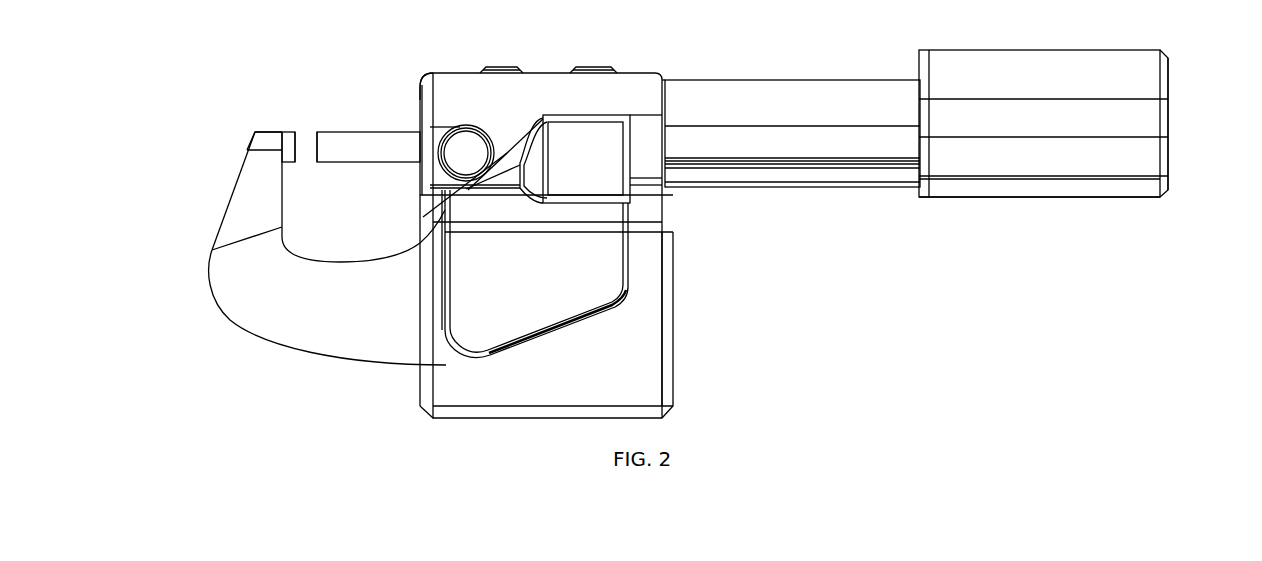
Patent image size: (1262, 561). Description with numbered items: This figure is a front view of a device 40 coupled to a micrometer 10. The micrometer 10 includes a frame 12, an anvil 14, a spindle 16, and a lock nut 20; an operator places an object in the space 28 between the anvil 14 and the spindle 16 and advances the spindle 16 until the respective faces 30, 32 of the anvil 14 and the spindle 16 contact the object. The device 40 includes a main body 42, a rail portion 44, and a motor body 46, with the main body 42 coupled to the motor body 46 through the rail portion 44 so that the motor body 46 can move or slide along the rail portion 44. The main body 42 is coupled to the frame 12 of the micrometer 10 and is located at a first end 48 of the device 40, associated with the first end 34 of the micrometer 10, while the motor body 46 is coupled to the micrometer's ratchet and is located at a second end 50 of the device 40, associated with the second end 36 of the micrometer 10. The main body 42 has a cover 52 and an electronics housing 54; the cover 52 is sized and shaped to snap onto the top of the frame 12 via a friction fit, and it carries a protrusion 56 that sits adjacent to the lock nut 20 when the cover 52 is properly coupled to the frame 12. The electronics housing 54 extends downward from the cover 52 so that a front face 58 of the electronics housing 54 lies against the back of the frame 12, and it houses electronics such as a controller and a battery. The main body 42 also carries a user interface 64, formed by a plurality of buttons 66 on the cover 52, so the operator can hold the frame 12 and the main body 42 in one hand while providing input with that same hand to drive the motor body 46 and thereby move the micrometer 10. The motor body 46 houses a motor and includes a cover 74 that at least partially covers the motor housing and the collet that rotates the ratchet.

The micrometer 10 is at (226, 78).
The frame 12 is at (378, 347).
The anvil 14 is at (295, 138).
The spindle 16 is at (362, 148).
The lock nut 20 is at (450, 153).
The space 28 is at (306, 138).
The face of the anvil 30 is at (304, 138).
The face of the spindle 32 is at (313, 153).
The first end of the micrometer 34 is at (206, 168).
The second end of the micrometer 36 is at (1214, 178).
The device 40 is at (791, 32).
The main body 42 is at (538, 24).
The rail portion 44 is at (768, 76).
The motor body 46 is at (1043, 38).
The first end of the device 48 is at (416, 77).
The second end of the device 50 is at (1177, 76).
The cover 52 is at (553, 95).
The electronics housing 54 is at (652, 312).
The protrusion 56 is at (463, 187).
The front face of the electronics housing 58 is at (640, 372).
The user interface 64 is at (480, 67).
The buttons 66 is at (493, 68).
The cover of the motor body 74 is at (1053, 190).